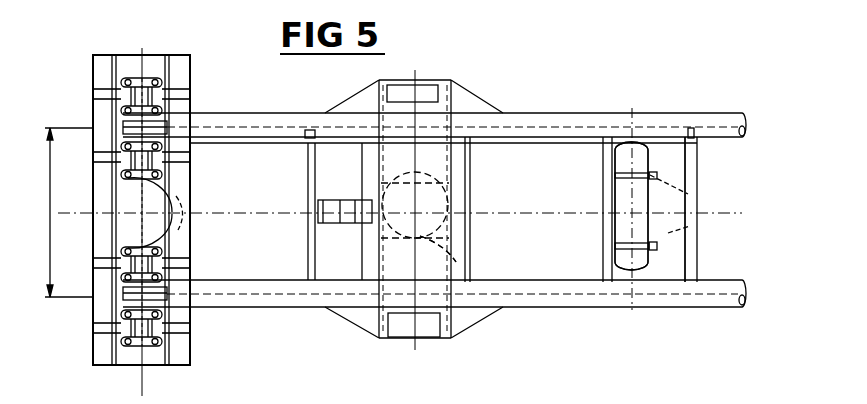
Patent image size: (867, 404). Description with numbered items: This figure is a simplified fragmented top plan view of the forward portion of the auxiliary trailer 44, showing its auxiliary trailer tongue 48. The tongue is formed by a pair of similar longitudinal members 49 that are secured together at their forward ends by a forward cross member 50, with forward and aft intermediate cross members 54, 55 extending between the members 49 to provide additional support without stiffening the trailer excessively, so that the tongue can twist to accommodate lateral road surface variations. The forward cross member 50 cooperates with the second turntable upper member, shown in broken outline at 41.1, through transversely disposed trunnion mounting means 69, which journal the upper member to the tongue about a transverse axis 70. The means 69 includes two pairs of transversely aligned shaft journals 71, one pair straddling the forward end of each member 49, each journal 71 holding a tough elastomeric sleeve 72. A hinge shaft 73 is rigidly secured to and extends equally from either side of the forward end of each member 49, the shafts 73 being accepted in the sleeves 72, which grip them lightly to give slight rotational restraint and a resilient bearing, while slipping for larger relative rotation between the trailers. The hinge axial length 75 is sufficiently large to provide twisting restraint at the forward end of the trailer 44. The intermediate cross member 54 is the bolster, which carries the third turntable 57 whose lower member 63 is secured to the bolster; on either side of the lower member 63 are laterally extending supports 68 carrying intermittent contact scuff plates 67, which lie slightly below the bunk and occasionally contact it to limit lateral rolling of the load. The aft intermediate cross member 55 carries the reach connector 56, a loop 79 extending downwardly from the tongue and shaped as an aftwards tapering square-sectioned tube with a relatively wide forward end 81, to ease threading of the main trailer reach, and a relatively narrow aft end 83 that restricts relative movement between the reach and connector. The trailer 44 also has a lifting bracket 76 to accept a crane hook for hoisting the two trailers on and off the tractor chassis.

The second turntable upper member 41.1 is at (183, 222).
The auxiliary trailer 44 is at (580, 88).
The auxiliary trailer tongue 48 is at (549, 110).
The longitudinal members 49 is at (610, 110).
The forward cross member 50 is at (182, 73).
The forward intermediate cross member (bolster) 54 is at (480, 172).
The aft intermediate cross member 55 is at (697, 162).
The reach connector 56 is at (687, 230).
The third turntable 57 is at (456, 262).
The third turntable lower member 63 is at (438, 249).
The intermittent contact scuff plates 67 is at (425, 95).
The laterally extending supports 68 is at (463, 105).
The trunnion mounting means 69 is at (124, 187).
The transverse axis 70 is at (143, 380).
The shaft journals 71 is at (150, 92).
The elastomeric sleeve 72 is at (146, 80).
The hinge shaft 73 is at (150, 213).
The hinge axial length 75 is at (52, 165).
The lifting bracket 76 is at (470, 218).
The loop 79 is at (631, 206).
The forward end of connector 81 is at (616, 245).
The aft end of connector 83 is at (685, 197).